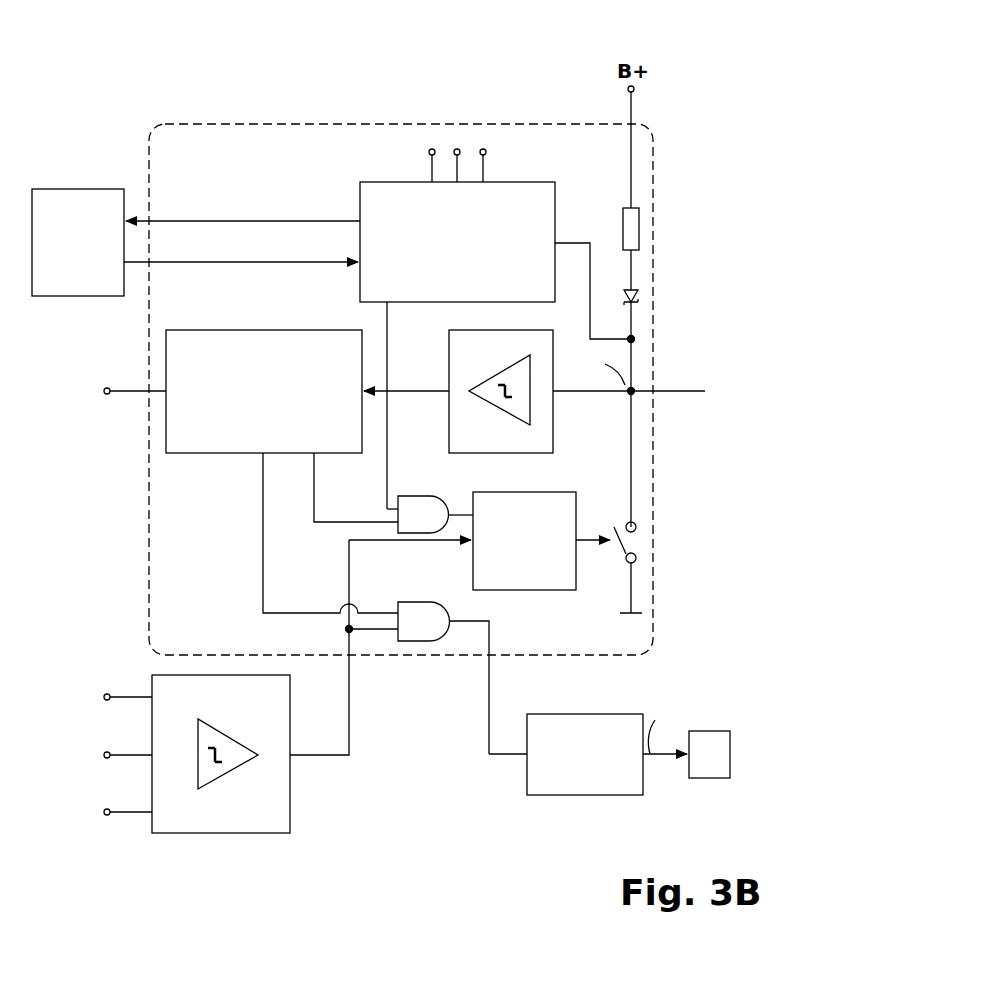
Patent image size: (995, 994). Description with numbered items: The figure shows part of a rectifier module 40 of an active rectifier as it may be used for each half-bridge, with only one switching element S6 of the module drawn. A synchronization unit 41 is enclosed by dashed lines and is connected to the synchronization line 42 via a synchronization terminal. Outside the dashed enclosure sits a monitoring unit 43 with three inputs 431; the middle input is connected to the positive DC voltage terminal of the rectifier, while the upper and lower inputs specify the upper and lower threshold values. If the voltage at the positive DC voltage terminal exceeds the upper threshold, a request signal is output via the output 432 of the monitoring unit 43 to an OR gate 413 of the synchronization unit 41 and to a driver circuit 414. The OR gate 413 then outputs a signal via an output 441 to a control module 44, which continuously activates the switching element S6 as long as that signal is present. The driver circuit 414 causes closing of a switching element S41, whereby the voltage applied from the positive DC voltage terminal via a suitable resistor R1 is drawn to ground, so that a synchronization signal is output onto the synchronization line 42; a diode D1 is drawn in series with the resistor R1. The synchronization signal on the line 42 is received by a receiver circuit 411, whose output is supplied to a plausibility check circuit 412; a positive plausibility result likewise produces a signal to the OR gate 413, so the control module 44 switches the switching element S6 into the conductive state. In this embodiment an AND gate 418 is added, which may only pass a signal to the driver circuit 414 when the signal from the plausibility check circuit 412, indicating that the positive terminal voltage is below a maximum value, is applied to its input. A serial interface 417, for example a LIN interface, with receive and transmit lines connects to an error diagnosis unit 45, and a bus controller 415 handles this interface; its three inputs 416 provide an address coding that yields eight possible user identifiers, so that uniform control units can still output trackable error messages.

The rectifier module 40 is at (226, 74).
The synchronization unit 41 is at (300, 124).
The error diagnosis unit 45 is at (80, 189).
The serial interface 417 is at (215, 204).
The bus controller 415 is at (528, 182).
The inputs 416 is at (424, 153).
The resistor R1 is at (623, 220).
The diode D1 is at (624, 296).
The synchronization line 42 is at (685, 391).
The plausibility check circuit 412 is at (214, 453).
The receiver circuit 411 is at (553, 417).
The AND gate 418 is at (413, 496).
The driver circuit 414 is at (538, 590).
The switching element S41 is at (616, 522).
The OR gate 413 is at (408, 602).
The output 432 is at (349, 706).
The monitoring unit 43 is at (290, 805).
The inputs 431 is at (136, 843).
The output 441 is at (498, 754).
The control module 44 is at (584, 795).
The switching element S6 is at (706, 778).